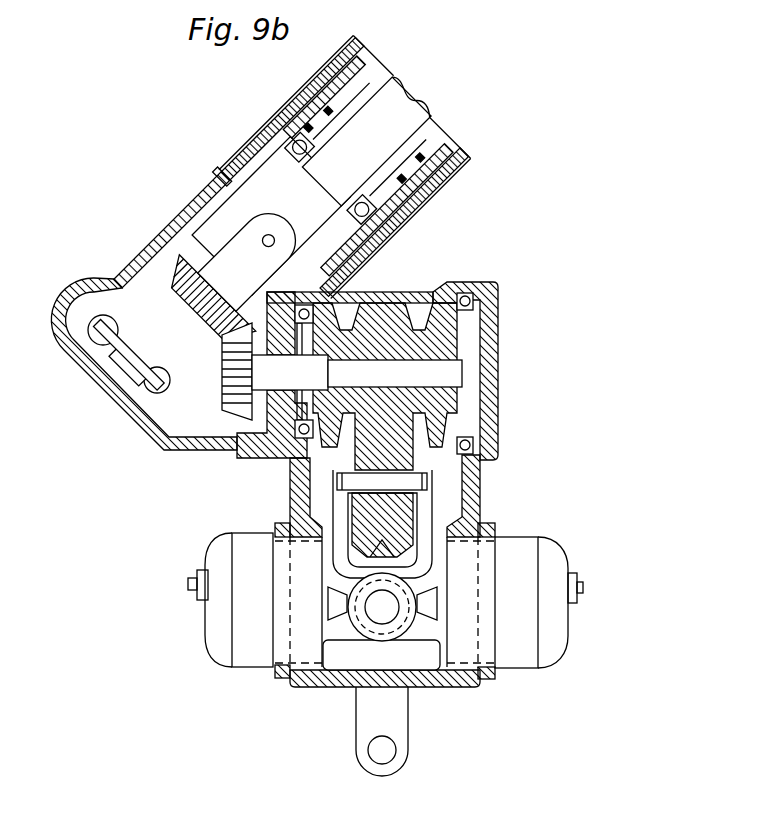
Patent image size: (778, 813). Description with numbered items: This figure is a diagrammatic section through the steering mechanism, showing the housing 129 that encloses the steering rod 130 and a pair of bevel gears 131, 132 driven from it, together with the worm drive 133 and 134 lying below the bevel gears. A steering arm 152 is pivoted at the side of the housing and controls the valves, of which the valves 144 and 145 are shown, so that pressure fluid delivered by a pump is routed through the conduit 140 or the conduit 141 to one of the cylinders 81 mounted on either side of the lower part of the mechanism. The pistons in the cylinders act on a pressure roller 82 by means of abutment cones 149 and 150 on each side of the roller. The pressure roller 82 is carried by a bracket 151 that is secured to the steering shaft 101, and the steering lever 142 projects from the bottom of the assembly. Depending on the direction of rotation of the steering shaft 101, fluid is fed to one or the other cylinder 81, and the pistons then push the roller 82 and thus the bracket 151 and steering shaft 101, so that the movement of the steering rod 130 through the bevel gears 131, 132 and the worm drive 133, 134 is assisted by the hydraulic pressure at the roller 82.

The cylinder 81 is at (262, 667).
The pressure roller 82 is at (413, 627).
The steering shaft 101 is at (397, 547).
The housing 129 is at (148, 270).
The steering rod 130 is at (400, 113).
The bevel gear 131 is at (200, 300).
The bevel gear 132 is at (243, 358).
The worm drive 133 is at (383, 340).
The worm drive 134 is at (373, 455).
The conduit 140 is at (190, 582).
The conduit 141 is at (583, 583).
The steering lever 142 is at (387, 707).
The valve 144 is at (153, 390).
The valve 145 is at (112, 323).
The abutment cone 149 is at (337, 597).
The abutment cone 150 is at (430, 600).
The bracket 151 is at (407, 580).
The steering arm 152 is at (123, 348).